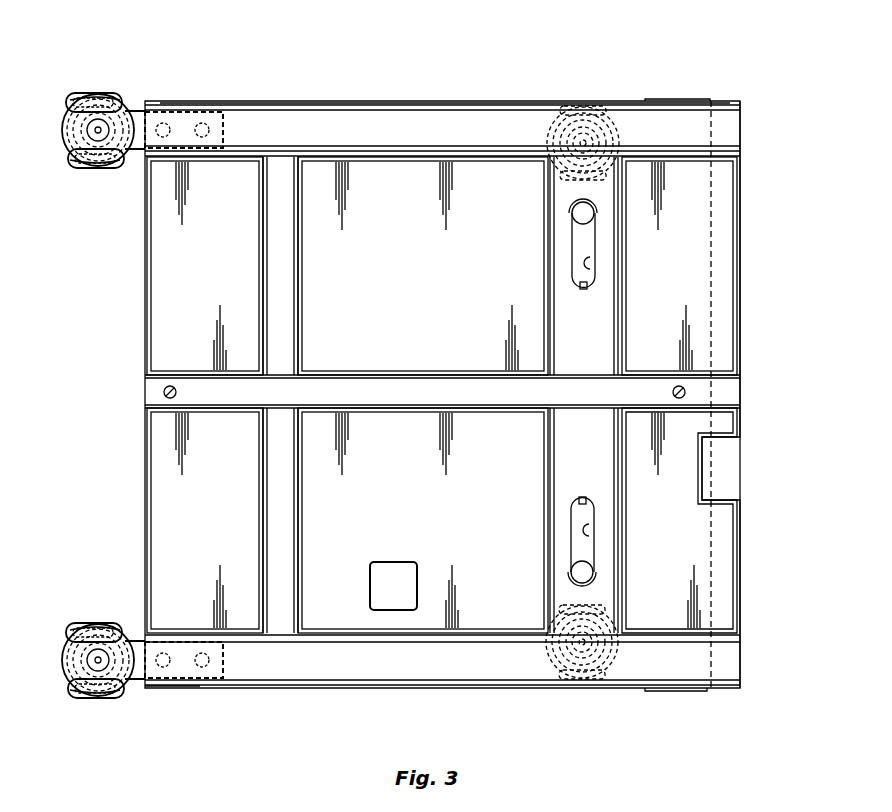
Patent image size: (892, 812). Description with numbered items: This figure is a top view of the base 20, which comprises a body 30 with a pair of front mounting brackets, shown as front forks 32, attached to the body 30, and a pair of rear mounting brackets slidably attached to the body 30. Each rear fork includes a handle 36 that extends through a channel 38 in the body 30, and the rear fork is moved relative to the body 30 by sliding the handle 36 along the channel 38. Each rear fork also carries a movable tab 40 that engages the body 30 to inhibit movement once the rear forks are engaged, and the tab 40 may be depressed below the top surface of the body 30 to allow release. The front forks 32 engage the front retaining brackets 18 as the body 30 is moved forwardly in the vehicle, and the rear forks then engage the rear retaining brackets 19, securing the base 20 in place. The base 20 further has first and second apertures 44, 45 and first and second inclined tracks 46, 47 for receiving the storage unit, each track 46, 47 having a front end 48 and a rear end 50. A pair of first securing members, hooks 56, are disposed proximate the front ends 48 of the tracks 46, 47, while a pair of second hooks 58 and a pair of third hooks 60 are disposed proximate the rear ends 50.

The front retaining bracket 18 is at (62, 125).
The rear retaining bracket 19 is at (612, 118).
The base 20 is at (413, 100).
The body 30 is at (145, 290).
The front fork 32 is at (82, 93).
The handle 36 is at (594, 213).
The channel 38 is at (590, 265).
The movable tab 40 is at (587, 286).
The first aperture 44 is at (168, 388).
The second aperture 45 is at (682, 388).
The first inclined track 46 is at (516, 108).
The second inclined track 47 is at (200, 690).
The front end 48 is at (143, 120).
The rear end 50 is at (742, 130).
The hook 56 is at (182, 112).
The hook 58 is at (650, 99).
The hook 60 is at (708, 100).